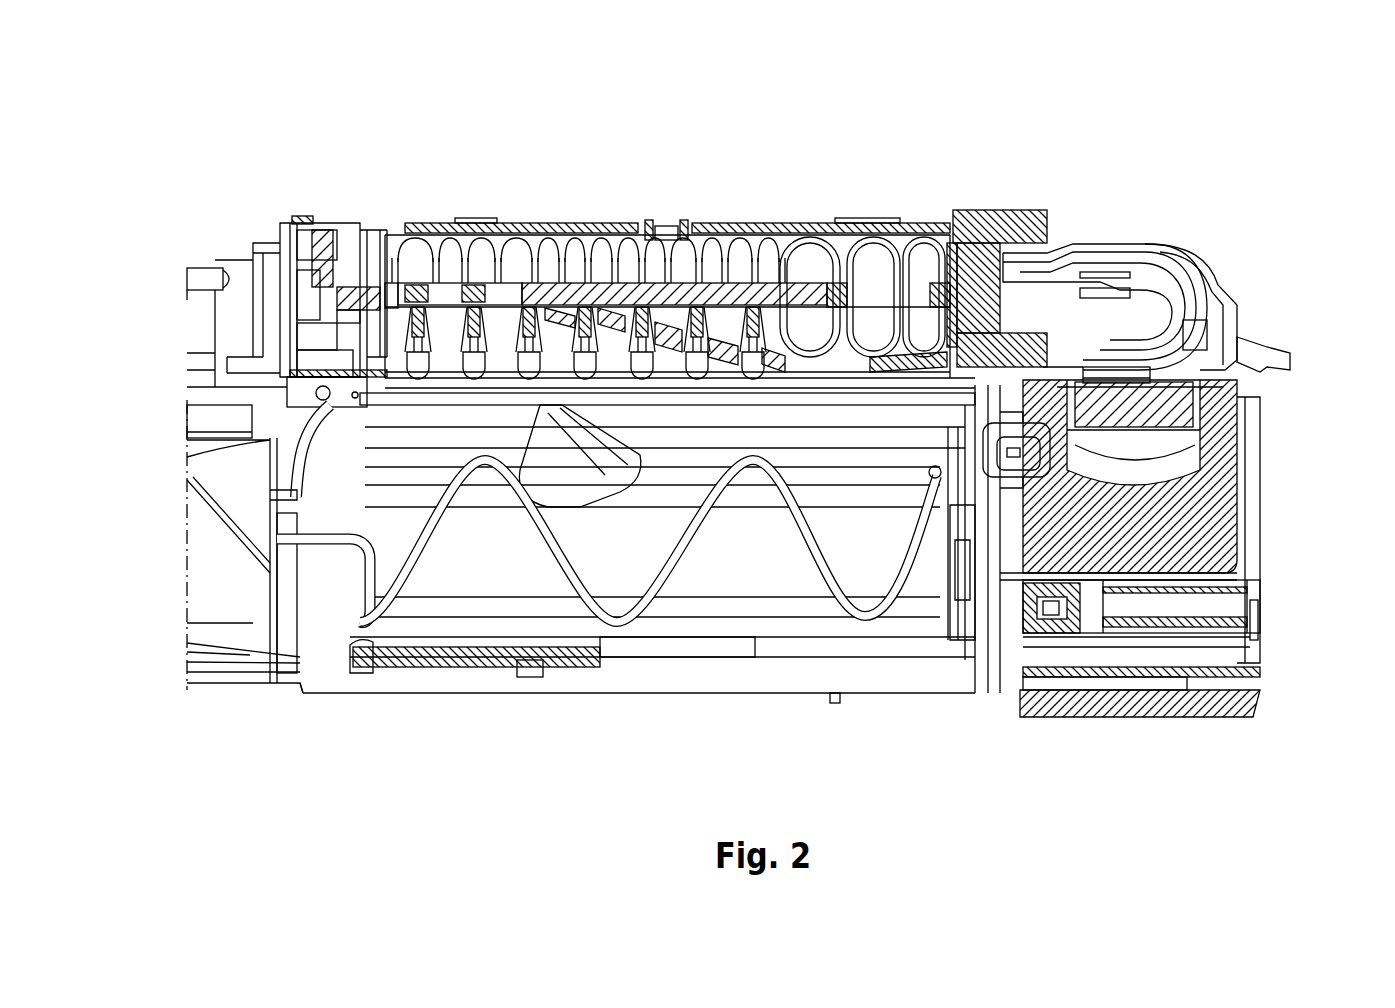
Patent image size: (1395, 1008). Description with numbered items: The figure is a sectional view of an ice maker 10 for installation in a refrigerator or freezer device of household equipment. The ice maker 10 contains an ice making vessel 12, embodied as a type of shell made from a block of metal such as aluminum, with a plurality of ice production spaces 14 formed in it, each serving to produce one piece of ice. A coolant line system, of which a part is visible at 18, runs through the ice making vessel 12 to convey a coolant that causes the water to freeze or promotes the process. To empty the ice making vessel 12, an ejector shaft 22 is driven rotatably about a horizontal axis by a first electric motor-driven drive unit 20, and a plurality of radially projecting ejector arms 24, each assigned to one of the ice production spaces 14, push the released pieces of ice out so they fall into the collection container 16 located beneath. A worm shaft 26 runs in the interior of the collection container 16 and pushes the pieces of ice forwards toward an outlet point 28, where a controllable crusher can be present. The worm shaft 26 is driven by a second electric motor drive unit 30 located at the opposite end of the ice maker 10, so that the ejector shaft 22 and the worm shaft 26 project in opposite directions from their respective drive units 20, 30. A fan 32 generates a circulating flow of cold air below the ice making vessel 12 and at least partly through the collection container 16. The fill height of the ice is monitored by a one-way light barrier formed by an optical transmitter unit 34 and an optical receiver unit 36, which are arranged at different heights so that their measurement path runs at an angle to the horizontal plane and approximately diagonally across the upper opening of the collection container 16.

The ice maker 10 is at (630, 134).
The ice making vessel 12 is at (737, 224).
The ice production spaces 14 is at (530, 250).
The collection container 16 is at (766, 692).
The coolant line system 18 is at (1138, 286).
The first electric motor-driven drive unit 20 is at (213, 325).
The ejector shaft 22 is at (440, 290).
The ejector arms 24 is at (650, 300).
The worm shaft 26 is at (680, 590).
The outlet point 28 is at (187, 558).
The second electric motor drive unit 30 is at (1248, 662).
The fan 32 is at (1160, 447).
The optical transmitter unit 34 is at (278, 440).
The optical receiver unit 36 is at (1080, 465).